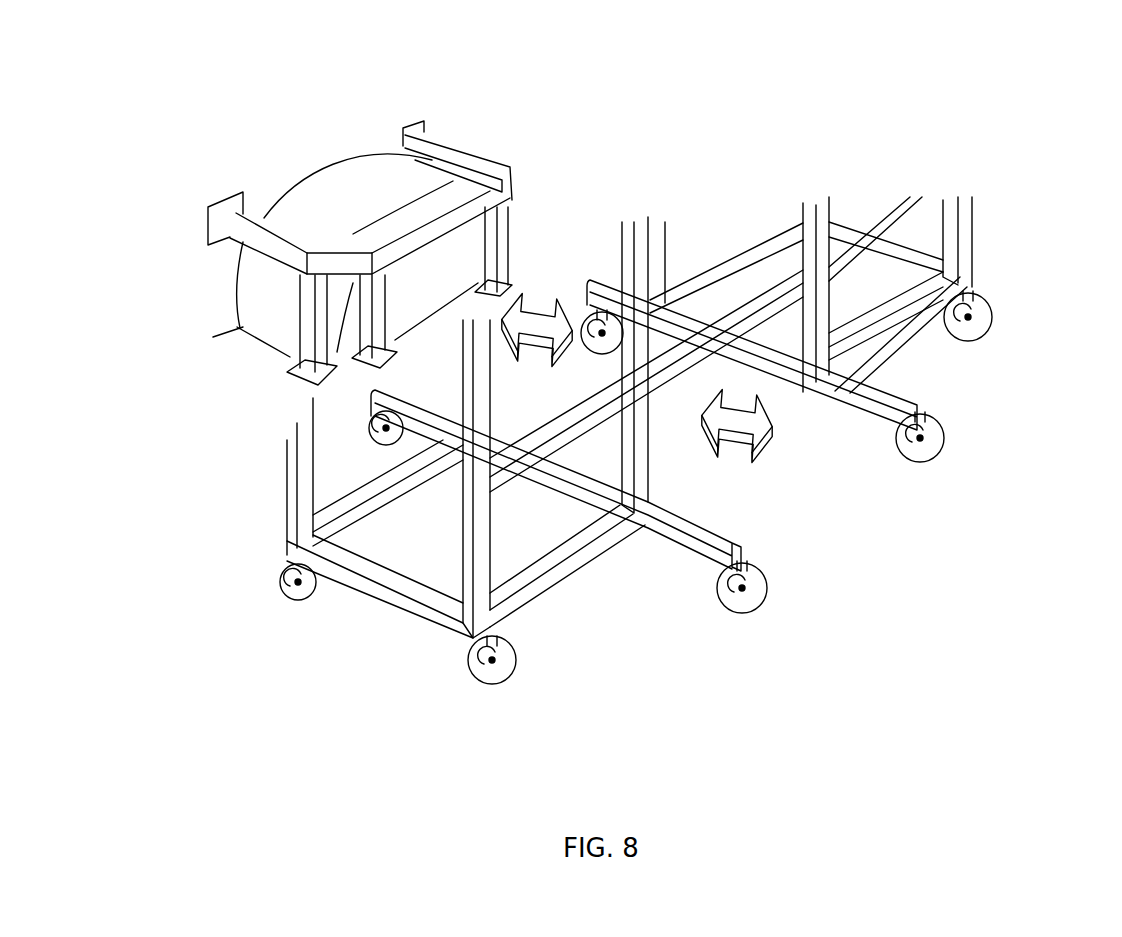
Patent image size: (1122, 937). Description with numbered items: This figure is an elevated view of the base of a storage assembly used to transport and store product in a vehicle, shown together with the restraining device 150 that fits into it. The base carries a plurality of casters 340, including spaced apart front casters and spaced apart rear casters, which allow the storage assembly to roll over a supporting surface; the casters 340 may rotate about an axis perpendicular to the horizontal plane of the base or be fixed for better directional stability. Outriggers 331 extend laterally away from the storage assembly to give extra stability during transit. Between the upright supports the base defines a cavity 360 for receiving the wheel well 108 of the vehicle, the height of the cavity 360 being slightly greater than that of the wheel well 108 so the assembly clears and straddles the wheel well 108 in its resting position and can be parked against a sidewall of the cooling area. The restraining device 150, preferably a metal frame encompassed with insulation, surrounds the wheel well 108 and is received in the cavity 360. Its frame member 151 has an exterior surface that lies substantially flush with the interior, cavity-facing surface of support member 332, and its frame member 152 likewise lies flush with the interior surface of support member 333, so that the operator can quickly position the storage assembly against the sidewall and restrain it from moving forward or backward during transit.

The wheel well 108 is at (268, 307).
The restraining device 150 is at (420, 230).
The frame member 151 is at (243, 247).
The frame member 152 is at (473, 153).
The outriggers 331 is at (905, 405).
The support member 332 is at (628, 455).
The support member 333 is at (821, 330).
The casters 340 is at (285, 582).
The cavity 360 is at (711, 470).